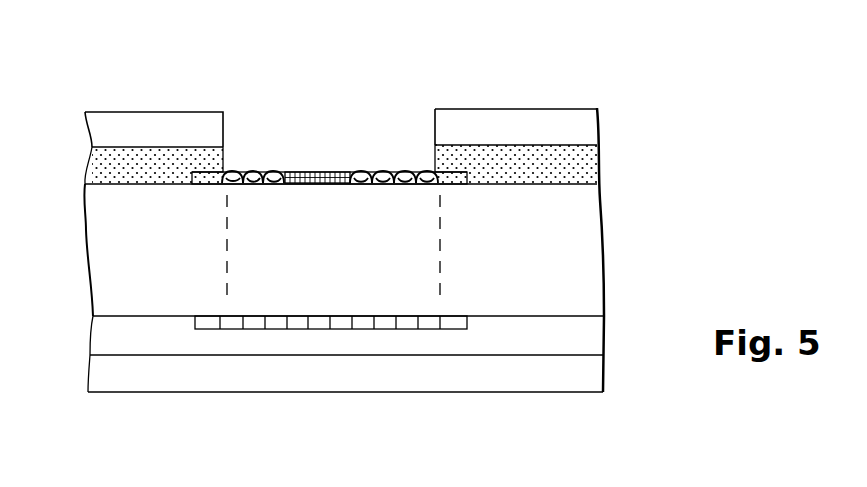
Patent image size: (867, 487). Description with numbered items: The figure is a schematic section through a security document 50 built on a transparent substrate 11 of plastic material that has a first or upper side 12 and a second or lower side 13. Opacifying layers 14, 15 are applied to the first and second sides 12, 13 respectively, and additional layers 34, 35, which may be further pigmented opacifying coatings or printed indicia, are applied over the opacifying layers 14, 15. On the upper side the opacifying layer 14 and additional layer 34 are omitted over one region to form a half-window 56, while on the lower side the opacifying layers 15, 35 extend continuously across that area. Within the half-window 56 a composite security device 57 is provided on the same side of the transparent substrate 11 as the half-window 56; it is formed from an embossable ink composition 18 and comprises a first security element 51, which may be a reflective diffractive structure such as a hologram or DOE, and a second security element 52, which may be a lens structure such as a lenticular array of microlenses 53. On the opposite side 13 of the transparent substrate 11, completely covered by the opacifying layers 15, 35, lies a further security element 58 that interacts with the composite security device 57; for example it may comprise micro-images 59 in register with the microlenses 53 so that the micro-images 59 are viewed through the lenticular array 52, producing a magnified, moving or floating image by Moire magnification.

The transparent substrate 11 is at (105, 238).
The first side 12 is at (575, 170).
The second side 13 is at (606, 318).
The opacifying layer 14 is at (100, 170).
The opacifying layer 15 is at (115, 340).
The embossable ink composition 18 is at (200, 184).
The additional layer 34 is at (108, 133).
The additional layer 35 is at (115, 378).
The security document 50 is at (588, 98).
The first security element 51 is at (335, 170).
The second security element 52 is at (250, 170).
The microlenses 53 is at (258, 185).
The half-window 56 is at (367, 135).
The composite security device 57 is at (288, 165).
The further security element 58 is at (243, 330).
The micro-images 59 is at (262, 330).